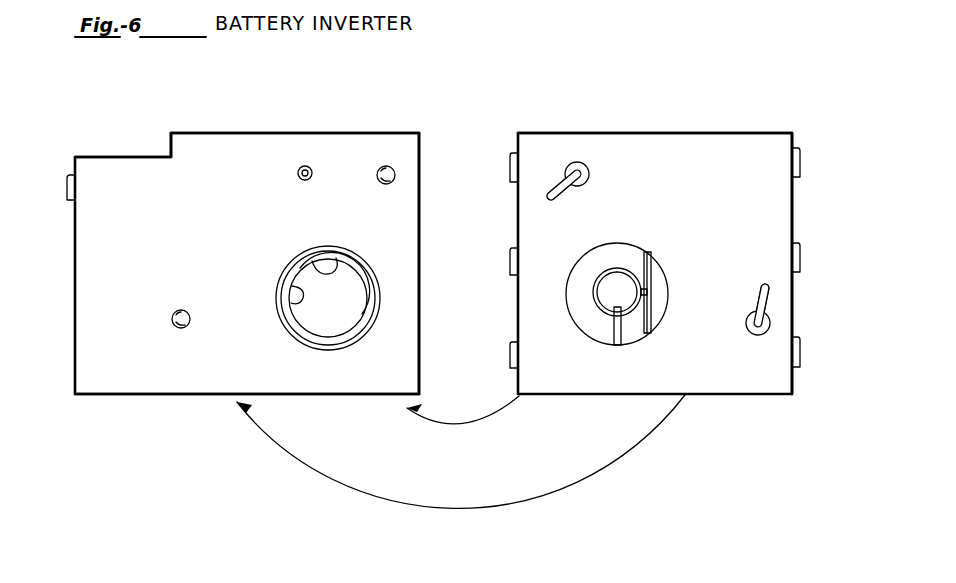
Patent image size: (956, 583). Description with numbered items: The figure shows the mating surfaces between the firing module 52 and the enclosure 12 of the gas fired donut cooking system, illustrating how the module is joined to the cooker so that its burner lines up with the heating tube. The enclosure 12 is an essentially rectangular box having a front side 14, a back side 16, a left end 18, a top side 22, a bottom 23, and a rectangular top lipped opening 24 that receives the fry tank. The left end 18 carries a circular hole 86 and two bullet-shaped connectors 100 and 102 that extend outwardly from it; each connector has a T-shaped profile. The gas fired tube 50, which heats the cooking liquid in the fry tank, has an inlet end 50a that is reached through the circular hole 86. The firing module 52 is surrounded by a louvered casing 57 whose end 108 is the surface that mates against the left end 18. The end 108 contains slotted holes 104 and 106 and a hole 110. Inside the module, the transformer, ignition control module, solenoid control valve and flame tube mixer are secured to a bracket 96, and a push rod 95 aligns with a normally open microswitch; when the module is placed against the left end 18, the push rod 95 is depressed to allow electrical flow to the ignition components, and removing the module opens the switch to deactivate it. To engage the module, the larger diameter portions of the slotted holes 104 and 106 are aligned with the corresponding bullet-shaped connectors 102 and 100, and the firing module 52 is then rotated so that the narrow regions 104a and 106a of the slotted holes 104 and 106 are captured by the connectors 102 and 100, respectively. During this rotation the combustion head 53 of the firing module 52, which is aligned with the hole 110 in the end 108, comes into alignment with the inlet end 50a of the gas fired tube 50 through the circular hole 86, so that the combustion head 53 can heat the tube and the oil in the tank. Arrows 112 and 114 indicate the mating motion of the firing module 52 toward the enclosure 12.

The enclosure 12 is at (66, 275).
The front side 14 is at (419, 205).
The back side 16 is at (73, 219).
The left end 18 is at (240, 269).
The top side 22 is at (130, 157).
The bottom 23 is at (133, 397).
The rectangular top lipped opening 24 is at (268, 122).
The gas fired tube 50 is at (297, 300).
The inlet end 50a is at (318, 267).
The firing module 52 is at (815, 245).
The combustion head 53 is at (617, 268).
The louvered casing 57 is at (795, 210).
The circular hole 86 is at (376, 276).
The push rod 95 is at (305, 165).
The bracket 96 is at (651, 266).
The bullet-shaped connector 100 is at (177, 311).
The bullet-shaped connector 102 is at (381, 183).
The slotted hole 104 is at (580, 162).
The narrow region 104a is at (569, 201).
The slotted hole 106 is at (770, 320).
The narrow region 106a is at (767, 293).
The end 108 is at (712, 143).
The hole 110 is at (655, 322).
The arrow 112 is at (462, 427).
The arrow 114 is at (540, 496).